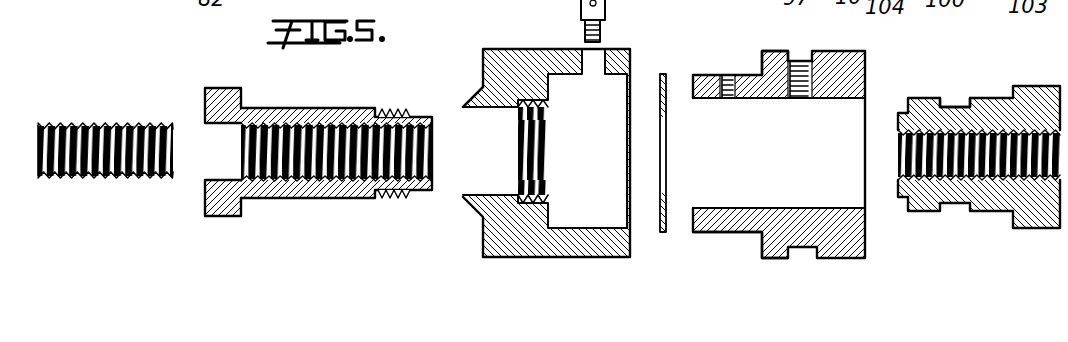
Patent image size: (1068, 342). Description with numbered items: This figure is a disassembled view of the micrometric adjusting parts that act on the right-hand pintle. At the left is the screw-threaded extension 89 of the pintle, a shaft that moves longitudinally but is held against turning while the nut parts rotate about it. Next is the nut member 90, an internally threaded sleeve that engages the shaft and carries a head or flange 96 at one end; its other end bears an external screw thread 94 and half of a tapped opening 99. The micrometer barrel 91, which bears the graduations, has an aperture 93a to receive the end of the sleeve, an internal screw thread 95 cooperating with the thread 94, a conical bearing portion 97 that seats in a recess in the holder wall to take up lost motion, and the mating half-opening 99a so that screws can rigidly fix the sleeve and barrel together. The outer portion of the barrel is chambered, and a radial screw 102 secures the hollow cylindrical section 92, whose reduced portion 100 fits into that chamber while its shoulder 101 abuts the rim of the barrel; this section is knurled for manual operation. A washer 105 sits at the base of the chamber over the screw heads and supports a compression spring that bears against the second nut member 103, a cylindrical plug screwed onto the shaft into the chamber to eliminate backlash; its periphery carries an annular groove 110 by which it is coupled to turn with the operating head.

The screw-threaded extension 89 is at (88, 114).
The nut member 90 is at (302, 128).
The screw thread 94 is at (396, 114).
The head or flange 96 is at (221, 209).
The tapped opening 99 is at (389, 195).
The micrometer barrel 91 is at (524, 53).
The conical bearing portion 97 is at (477, 98).
The aperture 93a is at (483, 187).
The screw thread 95 is at (547, 157).
The tapped opening 99a is at (549, 197).
The radial screw 102 is at (606, 18).
The washer 105 is at (662, 231).
The hollow cylindrical section 92 is at (795, 156).
The shoulder 101 is at (772, 50).
The reduced portion 100 is at (743, 227).
The nut member 103 is at (1001, 210).
The annular groove 110 is at (952, 105).